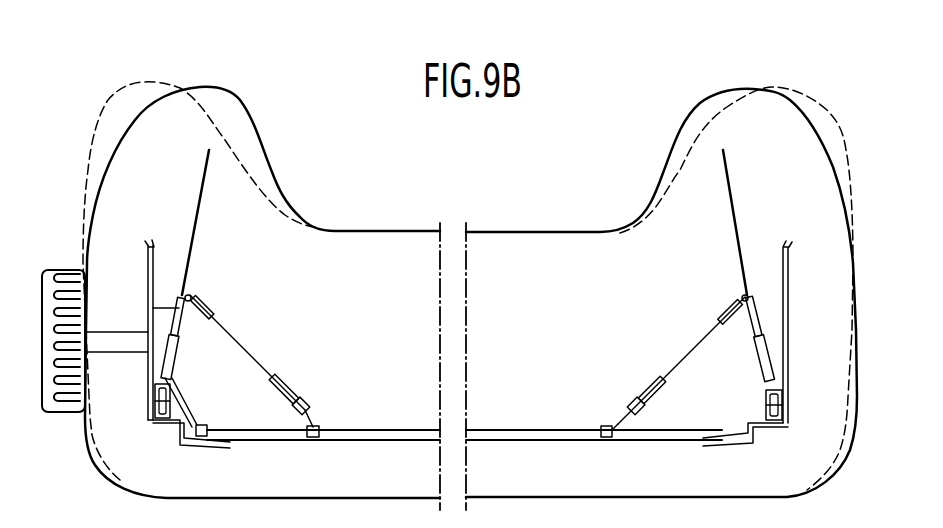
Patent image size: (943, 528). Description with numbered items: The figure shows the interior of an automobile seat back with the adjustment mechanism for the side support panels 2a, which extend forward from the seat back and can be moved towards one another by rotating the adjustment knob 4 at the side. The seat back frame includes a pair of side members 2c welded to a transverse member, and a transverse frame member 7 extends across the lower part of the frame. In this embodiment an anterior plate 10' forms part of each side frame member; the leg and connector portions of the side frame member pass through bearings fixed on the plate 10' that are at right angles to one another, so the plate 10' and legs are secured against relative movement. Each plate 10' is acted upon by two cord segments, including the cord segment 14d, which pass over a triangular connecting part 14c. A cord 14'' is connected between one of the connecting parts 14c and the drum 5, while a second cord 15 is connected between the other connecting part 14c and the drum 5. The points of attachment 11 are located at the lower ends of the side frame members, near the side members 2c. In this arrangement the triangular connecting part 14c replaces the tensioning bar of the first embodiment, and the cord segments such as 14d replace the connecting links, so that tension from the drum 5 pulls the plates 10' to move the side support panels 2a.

The side support panel 2a is at (213, 88).
The side member 2c is at (147, 280).
The adjustment knob 4 is at (47, 412).
The drum 5 is at (170, 307).
The transverse frame member 7 is at (363, 445).
The anterior plate 10' is at (468, 288).
The point of attachment 11 is at (143, 422).
The triangular connecting part 14c is at (290, 380).
The cord segment 14d is at (240, 343).
The cord 14'' is at (594, 402).
The cord 15 is at (320, 413).